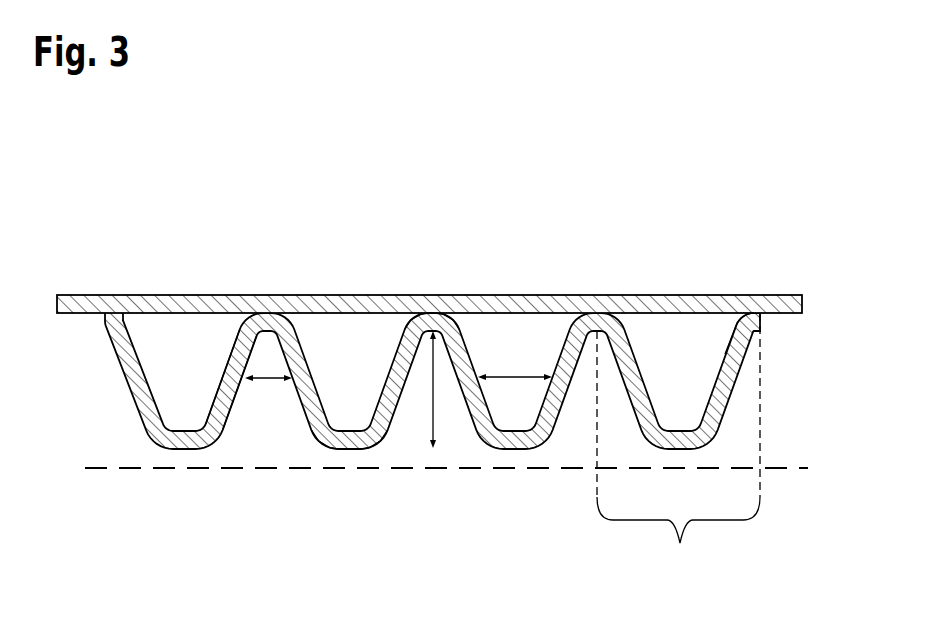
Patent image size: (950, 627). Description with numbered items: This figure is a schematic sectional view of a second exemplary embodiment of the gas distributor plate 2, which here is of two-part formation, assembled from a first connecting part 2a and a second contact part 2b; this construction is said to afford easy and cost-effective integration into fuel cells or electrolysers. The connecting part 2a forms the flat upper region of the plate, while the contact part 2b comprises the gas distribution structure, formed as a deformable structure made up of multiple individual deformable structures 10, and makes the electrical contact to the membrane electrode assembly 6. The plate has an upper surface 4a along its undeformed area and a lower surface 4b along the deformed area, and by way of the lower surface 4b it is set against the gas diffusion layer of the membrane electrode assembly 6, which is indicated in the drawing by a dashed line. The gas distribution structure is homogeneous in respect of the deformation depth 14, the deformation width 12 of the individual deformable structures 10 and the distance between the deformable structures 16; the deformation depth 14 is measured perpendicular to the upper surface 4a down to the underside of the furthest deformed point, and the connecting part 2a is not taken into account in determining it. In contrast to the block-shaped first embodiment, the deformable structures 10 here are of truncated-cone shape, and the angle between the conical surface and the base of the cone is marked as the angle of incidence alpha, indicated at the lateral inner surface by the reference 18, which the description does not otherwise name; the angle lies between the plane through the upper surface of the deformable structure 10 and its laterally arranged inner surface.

The gas distributor plate 2 is at (442, 303).
The first connecting part 2a is at (717, 295).
The second contact part 2b is at (752, 362).
The upper surface 4a is at (433, 313).
The lower surface 4b is at (348, 450).
The membrane electrode assembly 6 is at (798, 473).
The deformable structure 10 is at (678, 447).
The deformation width 12 is at (513, 377).
The deformation depth 14 is at (430, 410).
The distance between deformable structures 16 is at (268, 378).
The wall of corrugation 18 is at (226, 349).